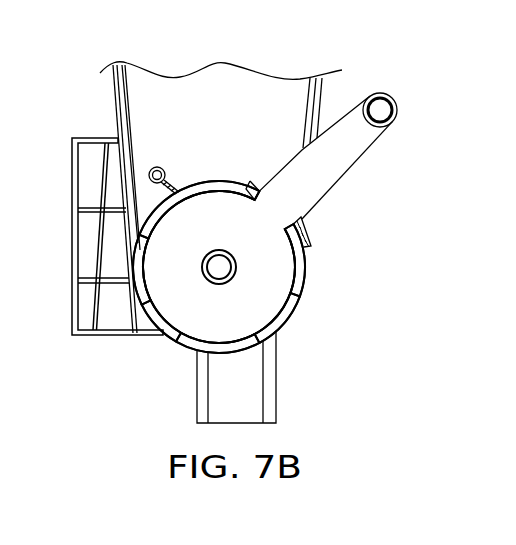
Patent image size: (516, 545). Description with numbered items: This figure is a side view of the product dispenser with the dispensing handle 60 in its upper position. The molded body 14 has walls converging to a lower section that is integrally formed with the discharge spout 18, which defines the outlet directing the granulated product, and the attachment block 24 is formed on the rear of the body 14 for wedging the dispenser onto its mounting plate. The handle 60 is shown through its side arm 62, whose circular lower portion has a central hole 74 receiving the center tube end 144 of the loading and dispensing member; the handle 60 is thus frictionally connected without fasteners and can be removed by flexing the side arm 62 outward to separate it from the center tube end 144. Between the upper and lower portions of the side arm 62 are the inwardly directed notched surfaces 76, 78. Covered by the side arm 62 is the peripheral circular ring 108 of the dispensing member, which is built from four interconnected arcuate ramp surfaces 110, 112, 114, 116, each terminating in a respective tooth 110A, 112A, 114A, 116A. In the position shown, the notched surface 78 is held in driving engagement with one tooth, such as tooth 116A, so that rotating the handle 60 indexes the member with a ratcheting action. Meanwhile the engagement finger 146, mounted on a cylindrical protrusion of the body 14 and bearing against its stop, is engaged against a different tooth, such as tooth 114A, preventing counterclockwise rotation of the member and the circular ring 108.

The body 14 is at (245, 82).
The attachment block 24 is at (95, 137).
The tooth 114A is at (185, 177).
The engagement finger 146 is at (170, 200).
The arcuate ramp surface 110 is at (294, 298).
The tooth 116A is at (306, 231).
The tooth 110A is at (265, 336).
The arcuate ramp surface 112 is at (176, 343).
The tooth 112A is at (143, 338).
The arcuate ramp surface 114 is at (134, 267).
The arcuate ramp surface 116 is at (207, 180).
The circular ring 108 is at (257, 162).
The notched surface 78 is at (286, 231).
The notched surface 76 is at (259, 195).
The central hole 74 is at (212, 283).
The center tube end 144 is at (234, 275).
The dispensing handle 60 is at (375, 173).
The side arm 62 is at (350, 128).
The discharge spout 18 is at (245, 403).